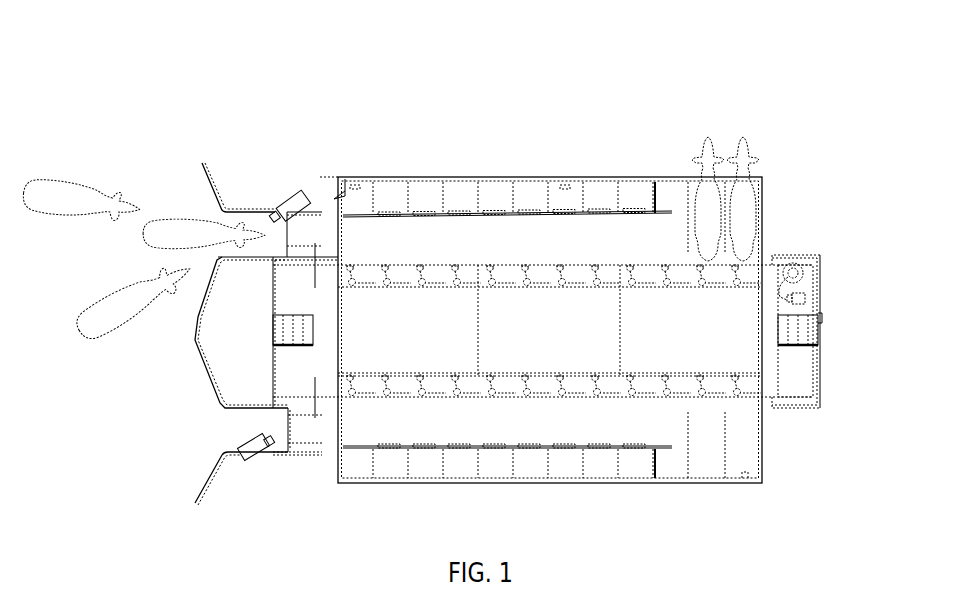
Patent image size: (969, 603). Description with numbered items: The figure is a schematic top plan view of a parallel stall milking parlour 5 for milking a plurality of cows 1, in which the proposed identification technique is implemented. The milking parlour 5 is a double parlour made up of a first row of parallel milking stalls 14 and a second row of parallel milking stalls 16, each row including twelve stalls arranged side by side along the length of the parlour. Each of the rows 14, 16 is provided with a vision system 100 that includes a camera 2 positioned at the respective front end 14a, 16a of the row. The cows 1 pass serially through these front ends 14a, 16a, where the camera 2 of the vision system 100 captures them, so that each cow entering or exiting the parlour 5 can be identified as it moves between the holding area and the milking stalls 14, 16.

The vision system 100 is at (256, 126).
The cows 1 is at (173, 218).
The camera 2 is at (290, 194).
The milking parlour 5 is at (768, 108).
The first row of parallel milking stalls 14 is at (778, 236).
The front end of the first row 14a is at (340, 241).
The second row of parallel milking stalls 16 is at (772, 420).
The front end of the second row 16a is at (340, 417).